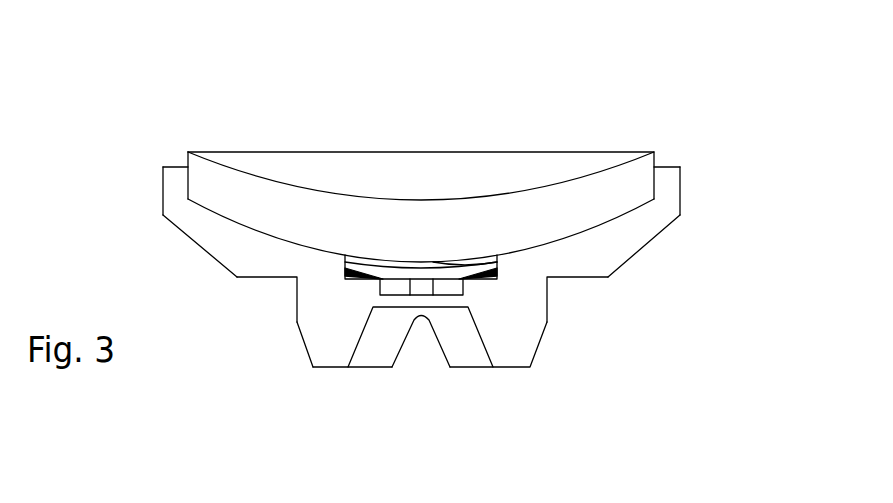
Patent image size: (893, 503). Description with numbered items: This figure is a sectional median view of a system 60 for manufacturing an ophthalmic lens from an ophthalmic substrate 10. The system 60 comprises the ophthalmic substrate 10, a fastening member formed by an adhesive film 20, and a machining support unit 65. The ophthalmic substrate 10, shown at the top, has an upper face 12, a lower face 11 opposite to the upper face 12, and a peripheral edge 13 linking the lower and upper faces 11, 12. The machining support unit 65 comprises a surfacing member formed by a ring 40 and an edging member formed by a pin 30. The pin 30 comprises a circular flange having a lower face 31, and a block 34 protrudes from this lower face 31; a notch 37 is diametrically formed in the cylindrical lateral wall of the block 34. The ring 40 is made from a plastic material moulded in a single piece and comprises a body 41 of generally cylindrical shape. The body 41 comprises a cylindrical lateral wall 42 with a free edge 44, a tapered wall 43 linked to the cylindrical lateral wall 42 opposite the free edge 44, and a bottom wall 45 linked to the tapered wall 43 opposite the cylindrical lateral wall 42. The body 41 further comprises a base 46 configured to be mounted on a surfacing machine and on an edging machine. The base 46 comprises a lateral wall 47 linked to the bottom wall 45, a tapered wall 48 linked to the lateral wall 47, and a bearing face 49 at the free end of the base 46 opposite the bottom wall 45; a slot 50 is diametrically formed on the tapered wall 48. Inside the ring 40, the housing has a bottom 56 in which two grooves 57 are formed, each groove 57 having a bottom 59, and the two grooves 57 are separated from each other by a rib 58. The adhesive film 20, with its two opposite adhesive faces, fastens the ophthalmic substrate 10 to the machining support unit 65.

The ophthalmic substrate 10 is at (188, 153).
The lower face 11 is at (288, 245).
The upper face 12 is at (327, 195).
The peripheral edge 13 is at (188, 180).
The adhesive film 20 is at (385, 262).
The pin 30 is at (452, 268).
The lower face 31 is at (497, 275).
The block 34 is at (383, 293).
The notch 37 is at (413, 268).
The ring 40 is at (163, 215).
The body 41 is at (235, 263).
The cylindrical lateral wall 42 is at (680, 188).
The tapered wall 43 is at (647, 243).
The free edge 44 is at (667, 167).
The bottom wall 45 is at (590, 278).
The base 46 is at (533, 342).
The lateral wall 47 is at (297, 302).
The tapered wall 48 is at (303, 347).
The bearing face 49 is at (333, 368).
The slot 50 is at (422, 352).
The bottom 56 is at (345, 272).
The grooves 57 is at (463, 293).
The rib 58 is at (423, 293).
The bottom 59 is at (443, 297).
The system 60 is at (715, 118).
The machining support unit 65 is at (662, 283).